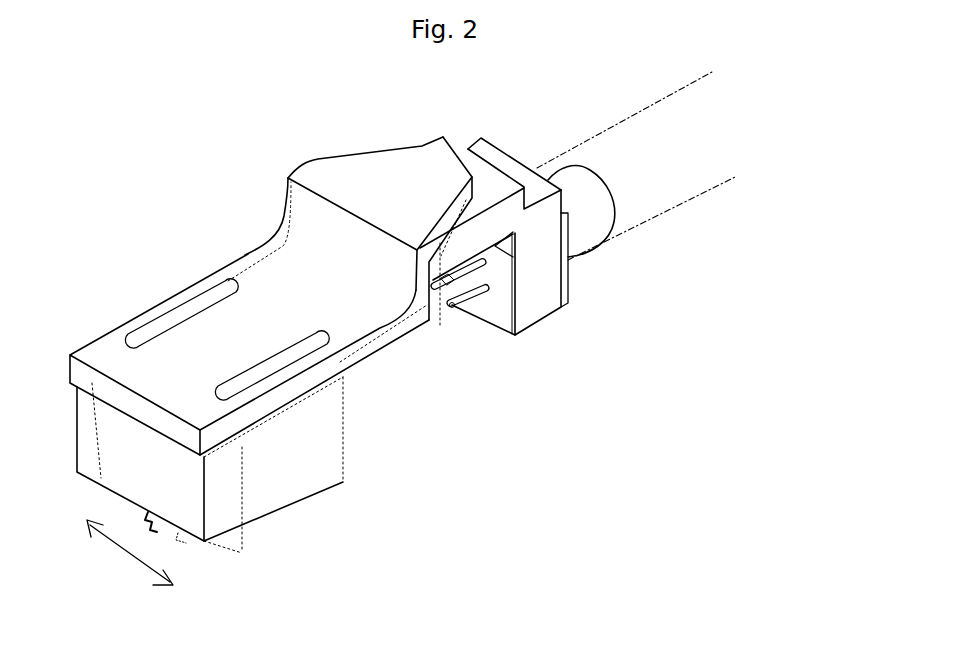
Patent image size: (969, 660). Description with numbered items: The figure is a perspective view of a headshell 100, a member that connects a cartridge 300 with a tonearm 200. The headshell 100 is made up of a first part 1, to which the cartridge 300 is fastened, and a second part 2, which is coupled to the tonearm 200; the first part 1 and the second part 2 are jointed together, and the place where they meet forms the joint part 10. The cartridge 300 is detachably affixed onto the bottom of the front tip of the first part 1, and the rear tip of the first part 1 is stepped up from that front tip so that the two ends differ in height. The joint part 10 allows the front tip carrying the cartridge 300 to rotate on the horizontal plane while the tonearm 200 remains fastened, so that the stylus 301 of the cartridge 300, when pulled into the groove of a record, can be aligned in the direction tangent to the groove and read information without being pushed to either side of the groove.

The headshell 100 is at (177, 111).
The first part 1 is at (264, 278).
The joint part 10 is at (364, 141).
The second part 2 is at (543, 304).
The tonearm 200 is at (613, 127).
The cartridge 300 is at (290, 490).
The stylus 301 is at (155, 533).